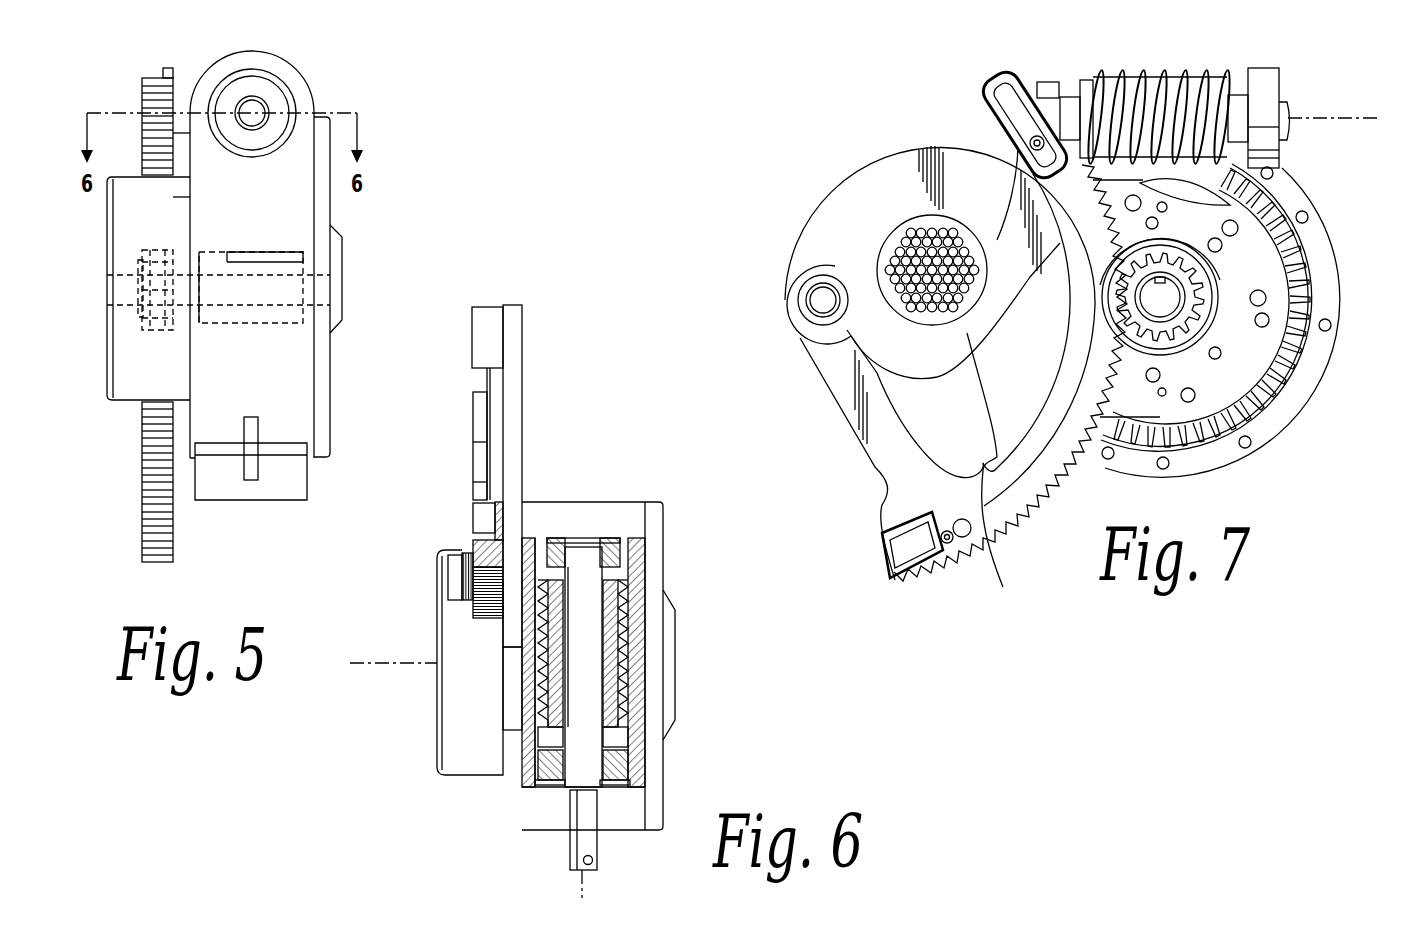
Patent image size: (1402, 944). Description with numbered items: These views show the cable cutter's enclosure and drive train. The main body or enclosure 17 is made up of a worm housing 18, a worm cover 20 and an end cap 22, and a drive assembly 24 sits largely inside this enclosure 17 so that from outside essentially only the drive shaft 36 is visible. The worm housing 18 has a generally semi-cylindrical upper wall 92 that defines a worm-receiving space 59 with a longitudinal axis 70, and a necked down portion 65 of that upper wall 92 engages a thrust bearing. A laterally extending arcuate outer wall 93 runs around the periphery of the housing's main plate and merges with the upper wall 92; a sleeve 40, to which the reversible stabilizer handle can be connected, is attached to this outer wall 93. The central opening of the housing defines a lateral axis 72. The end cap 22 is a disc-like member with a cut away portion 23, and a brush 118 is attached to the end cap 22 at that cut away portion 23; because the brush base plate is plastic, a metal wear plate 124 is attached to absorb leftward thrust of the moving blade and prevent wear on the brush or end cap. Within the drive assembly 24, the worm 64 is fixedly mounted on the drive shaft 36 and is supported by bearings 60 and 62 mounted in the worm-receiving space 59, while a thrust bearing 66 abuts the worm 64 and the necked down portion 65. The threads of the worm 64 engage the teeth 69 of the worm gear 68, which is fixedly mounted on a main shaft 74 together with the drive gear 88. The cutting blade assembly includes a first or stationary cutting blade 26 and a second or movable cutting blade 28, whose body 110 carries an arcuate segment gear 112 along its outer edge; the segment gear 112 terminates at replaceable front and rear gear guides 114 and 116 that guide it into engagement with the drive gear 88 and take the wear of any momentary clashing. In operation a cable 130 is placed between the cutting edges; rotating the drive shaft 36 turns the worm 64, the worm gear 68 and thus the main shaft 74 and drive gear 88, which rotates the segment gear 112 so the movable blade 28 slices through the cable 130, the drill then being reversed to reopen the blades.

In FIG. 5, the main body or enclosure 17 is at (307, 254).
In FIG. 6, the main body or enclosure 17 is at (639, 622).
In FIG. 5, the worm housing 18 is at (295, 417).
In FIG. 6, the worm housing 18 is at (575, 515).
In FIG. 7, the worm housing 18 is at (1310, 227).
In FIG. 5, the worm cover 20 is at (330, 210).
In FIG. 6, the worm cover 20 is at (668, 685).
In FIG. 5, the end cap 22 is at (108, 228).
In FIG. 6, the end cap 22 is at (460, 765).
In FIG. 6, the cut away portion 23 is at (490, 623).
In FIG. 6, the drive assembly 24 is at (555, 858).
In FIG. 7, the drive assembly 24 is at (1125, 58).
In FIG. 6, the stationary cutting blade 26 is at (538, 372).
In FIG. 7, the stationary cutting blade 26 is at (933, 342).
In FIG. 5, the movable cutting blade 28 is at (125, 500).
In FIG. 6, the movable cutting blade 28 is at (463, 463).
In FIG. 7, the movable cutting blade 28 is at (850, 480).
In FIG. 5, the drive shaft 36 is at (257, 110).
In FIG. 6, the drive shaft 36 is at (568, 841).
In FIG. 7, the drive shaft 36 is at (1288, 107).
In FIG. 5, the sleeve 40 is at (298, 502).
In FIG. 6, the worm-receiving space 59 is at (628, 750).
In FIG. 6, the bearing 60 is at (632, 767).
In FIG. 7, the bearing 60 is at (1270, 67).
In FIG. 6, the bearing 62 is at (645, 557).
In FIG. 7, the bearing 62 is at (987, 108).
In FIG. 6, the worm 64 is at (617, 665).
In FIG. 7, the worm 64 is at (1154, 98).
In FIG. 6, the necked down portion 65 is at (532, 542).
In FIG. 6, the thrust bearing 66 is at (632, 587).
In FIG. 7, the worm gear 68 is at (1247, 295).
In FIG. 7, the teeth 69 is at (1307, 273).
In FIG. 6, the longitudinal axis 70 is at (582, 890).
In FIG. 7, the longitudinal axis 70 is at (1343, 117).
In FIG. 6, the lateral axis 72 is at (365, 667).
In FIG. 5, the main shaft 74 is at (303, 258).
In FIG. 5, the drive gear 88 is at (147, 327).
In FIG. 7, the drive gear 88 is at (1180, 320).
In FIG. 5, the upper wall 92 is at (227, 53).
In FIG. 5, the arcuate outer wall 93 is at (293, 352).
In FIG. 7, the body 110 is at (997, 479).
In FIG. 7, the arcuate segment gear 112 is at (1070, 487).
In FIG. 7, the front gear guide 114 is at (1010, 103).
In FIG. 7, the rear gear guide 116 is at (893, 577).
In FIG. 6, the brush 118 is at (460, 550).
In FIG. 6, the wear plate 124 is at (468, 602).
In FIG. 7, the cable 130 is at (890, 250).